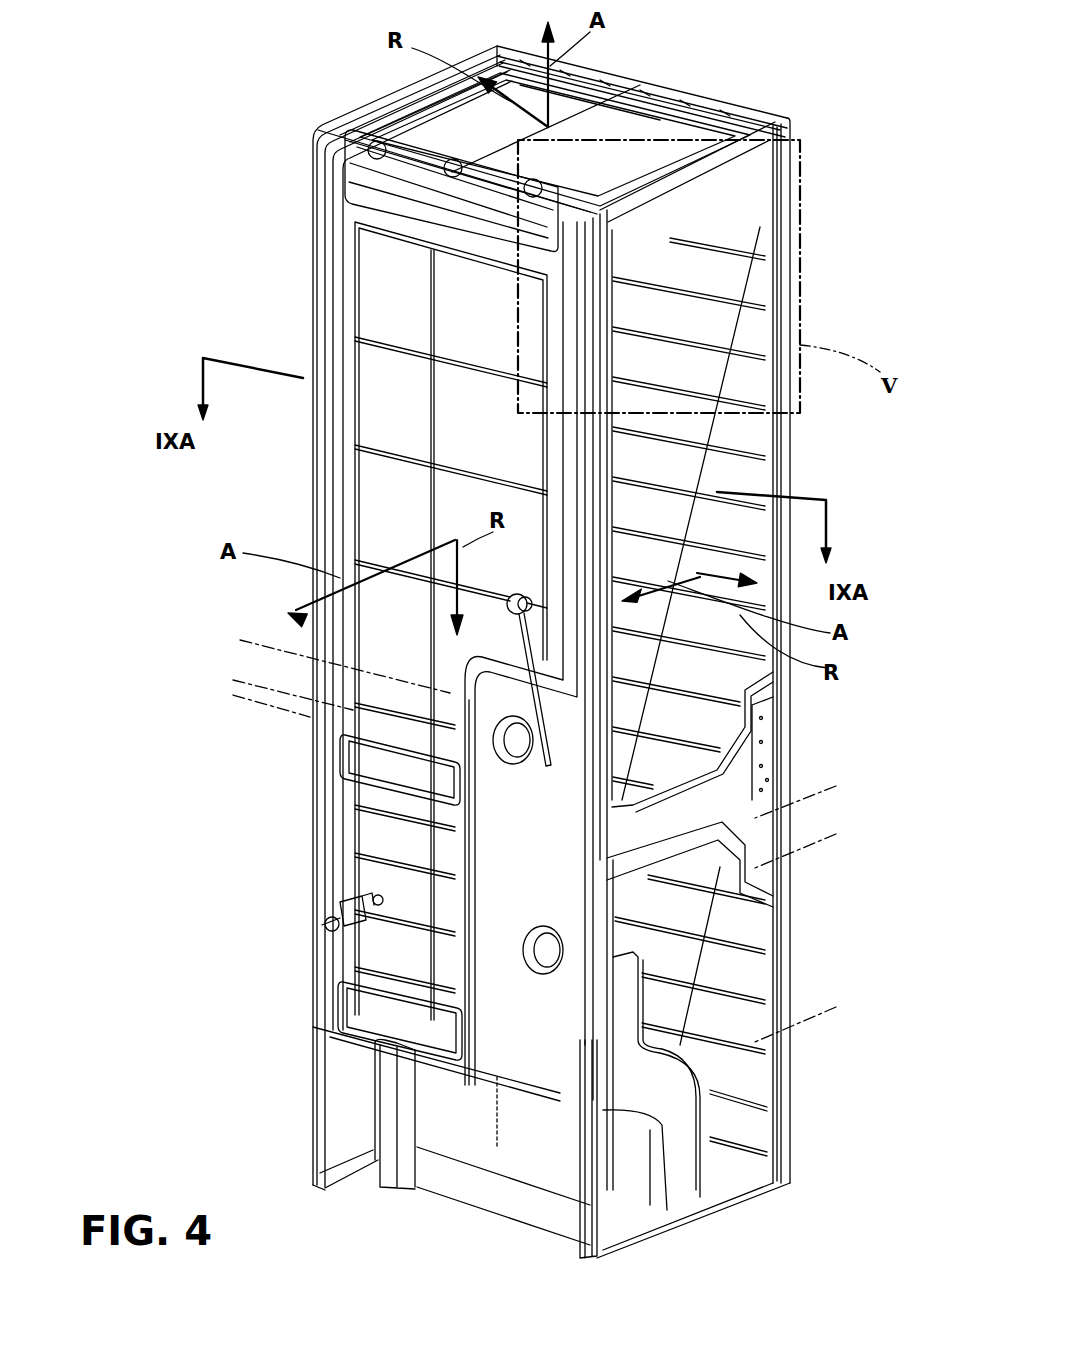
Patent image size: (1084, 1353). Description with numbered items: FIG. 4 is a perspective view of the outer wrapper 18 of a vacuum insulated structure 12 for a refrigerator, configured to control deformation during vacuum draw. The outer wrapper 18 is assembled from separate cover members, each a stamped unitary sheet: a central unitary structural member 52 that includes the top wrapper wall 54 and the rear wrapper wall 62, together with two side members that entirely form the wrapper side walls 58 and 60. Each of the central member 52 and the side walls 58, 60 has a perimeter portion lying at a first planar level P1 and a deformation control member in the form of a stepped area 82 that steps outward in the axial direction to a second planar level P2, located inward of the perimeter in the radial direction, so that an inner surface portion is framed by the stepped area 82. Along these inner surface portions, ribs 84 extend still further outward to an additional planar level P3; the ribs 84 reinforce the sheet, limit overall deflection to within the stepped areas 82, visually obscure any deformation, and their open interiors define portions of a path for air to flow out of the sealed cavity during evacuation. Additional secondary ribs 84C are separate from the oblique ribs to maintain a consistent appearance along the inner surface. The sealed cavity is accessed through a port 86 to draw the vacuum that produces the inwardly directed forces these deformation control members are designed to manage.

The vacuum insulated structure 12 is at (832, 133).
The outer wrapper 18 is at (797, 455).
The central unitary structural member 52 is at (514, 1006).
The top wrapper wall 54 is at (440, 120).
The wrapper side wall 58 is at (557, 1204).
The wrapper side wall 60 is at (300, 744).
The rear wrapper wall 62 is at (383, 832).
The deformation control member (stepped area) 82 is at (320, 258).
The rib 84 is at (418, 437).
The secondary rib 84C is at (737, 1097).
The port 86 is at (330, 922).
The first planar level P1 is at (255, 643).
The second planar level P2 is at (262, 688).
The additional planar level P3 is at (258, 693).